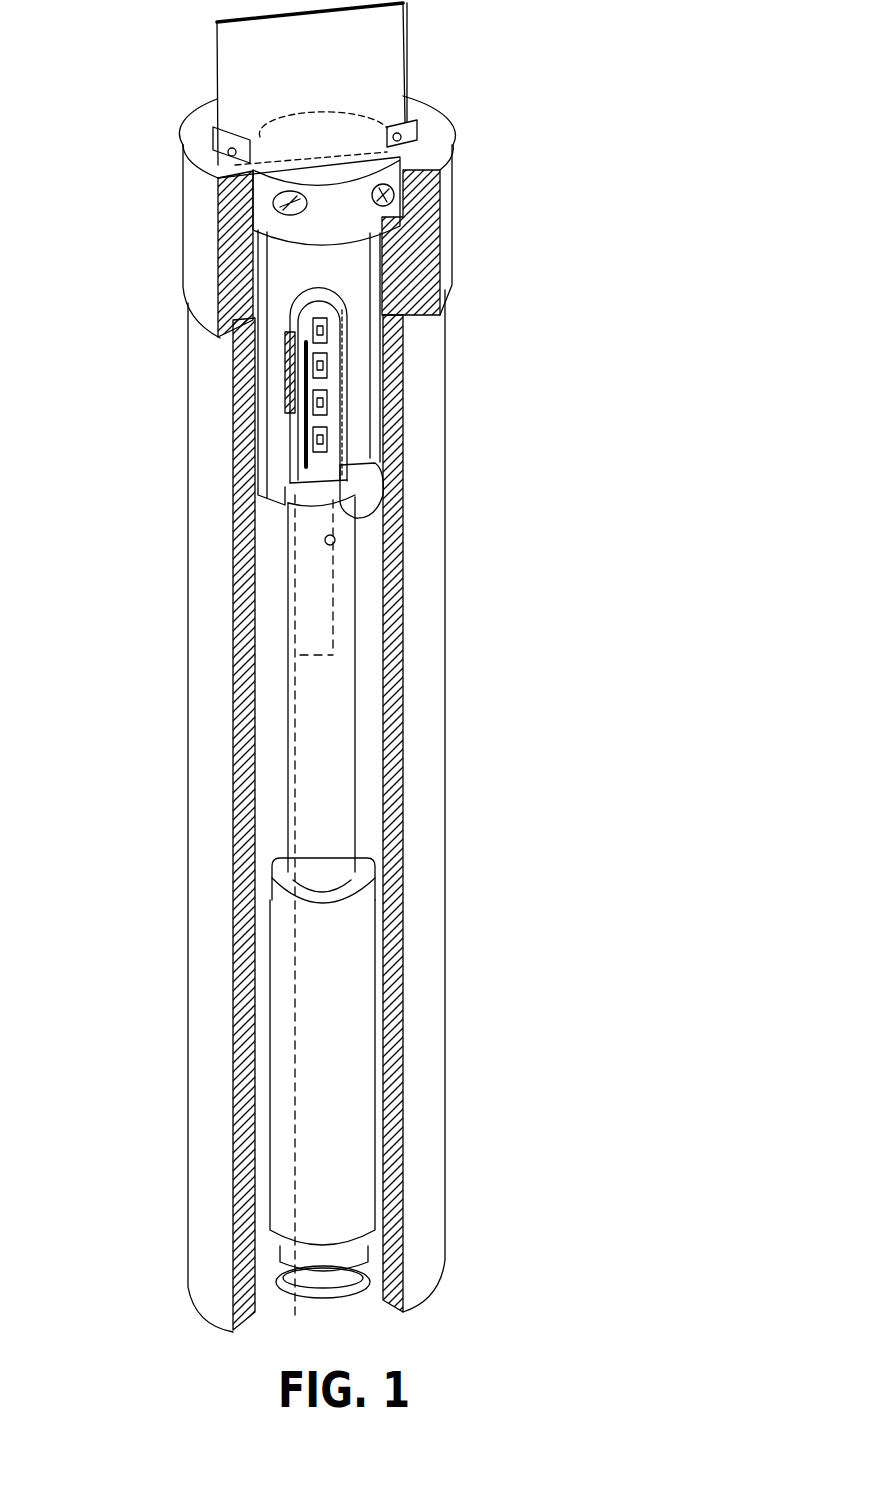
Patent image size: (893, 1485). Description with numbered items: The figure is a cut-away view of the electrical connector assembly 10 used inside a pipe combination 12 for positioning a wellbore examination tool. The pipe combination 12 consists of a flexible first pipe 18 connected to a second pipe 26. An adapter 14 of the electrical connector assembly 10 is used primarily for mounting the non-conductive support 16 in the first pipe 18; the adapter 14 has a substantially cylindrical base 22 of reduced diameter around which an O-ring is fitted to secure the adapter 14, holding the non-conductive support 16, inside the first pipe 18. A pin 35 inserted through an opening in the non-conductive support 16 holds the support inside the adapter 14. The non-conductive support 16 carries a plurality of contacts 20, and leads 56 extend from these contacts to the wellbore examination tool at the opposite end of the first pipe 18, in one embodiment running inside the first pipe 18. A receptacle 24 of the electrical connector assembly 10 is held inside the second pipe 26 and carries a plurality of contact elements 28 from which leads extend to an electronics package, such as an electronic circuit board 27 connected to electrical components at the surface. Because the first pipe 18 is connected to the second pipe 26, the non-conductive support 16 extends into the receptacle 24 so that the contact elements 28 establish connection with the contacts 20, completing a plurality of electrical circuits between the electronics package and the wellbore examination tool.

The electrical connector assembly 10 is at (218, 650).
The pipe combination 12 is at (443, 327).
The adapter 14 is at (357, 708).
The non-conductive support 16 is at (330, 470).
The first pipe 18 is at (435, 1047).
The contacts 20 is at (300, 358).
The cylindrical base 22 is at (365, 1262).
The receptacle 24 is at (303, 173).
The second pipe 26 is at (452, 163).
The electronic circuit board 27 is at (360, 72).
The contact elements 28 is at (345, 360).
The pin 35 is at (335, 543).
The leads 56 is at (307, 1017).